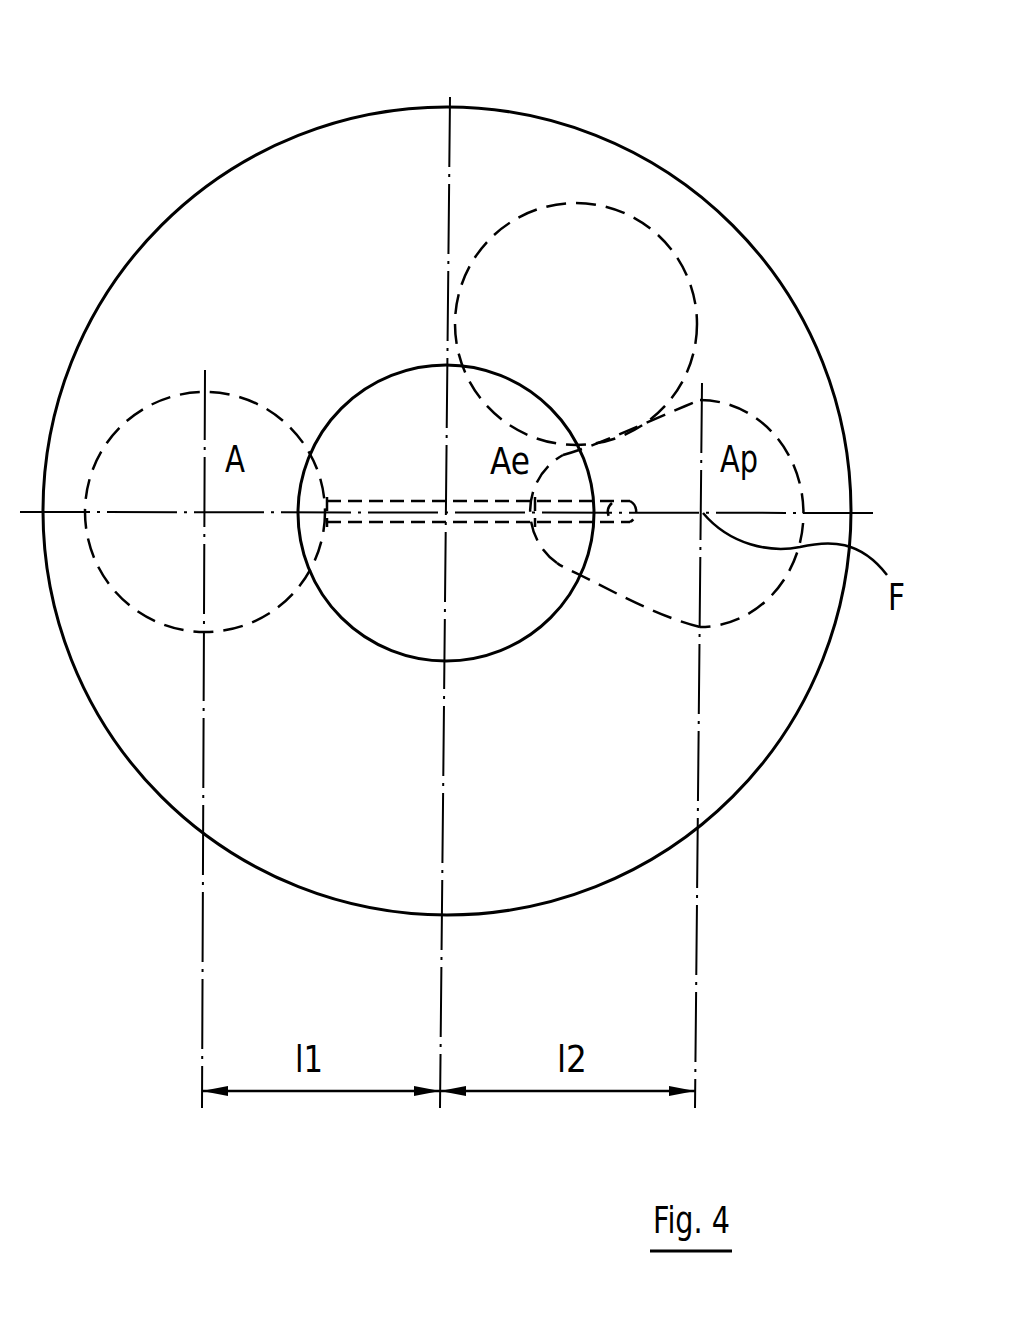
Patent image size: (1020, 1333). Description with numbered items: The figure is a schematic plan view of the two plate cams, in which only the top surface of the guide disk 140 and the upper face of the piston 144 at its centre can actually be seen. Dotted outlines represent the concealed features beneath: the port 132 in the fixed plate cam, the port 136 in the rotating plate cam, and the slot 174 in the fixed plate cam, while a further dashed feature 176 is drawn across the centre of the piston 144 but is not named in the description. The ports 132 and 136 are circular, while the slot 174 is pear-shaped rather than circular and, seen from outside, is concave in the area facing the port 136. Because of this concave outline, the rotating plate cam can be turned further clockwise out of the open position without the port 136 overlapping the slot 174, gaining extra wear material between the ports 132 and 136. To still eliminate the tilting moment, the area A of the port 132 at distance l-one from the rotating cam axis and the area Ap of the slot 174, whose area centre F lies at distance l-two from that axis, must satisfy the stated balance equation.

The port 132 is at (137, 410).
The port 136 is at (558, 203).
The guide disk 140 is at (742, 268).
The piston 144 is at (387, 402).
The slot 174 is at (760, 610).
The slot 176 is at (385, 520).